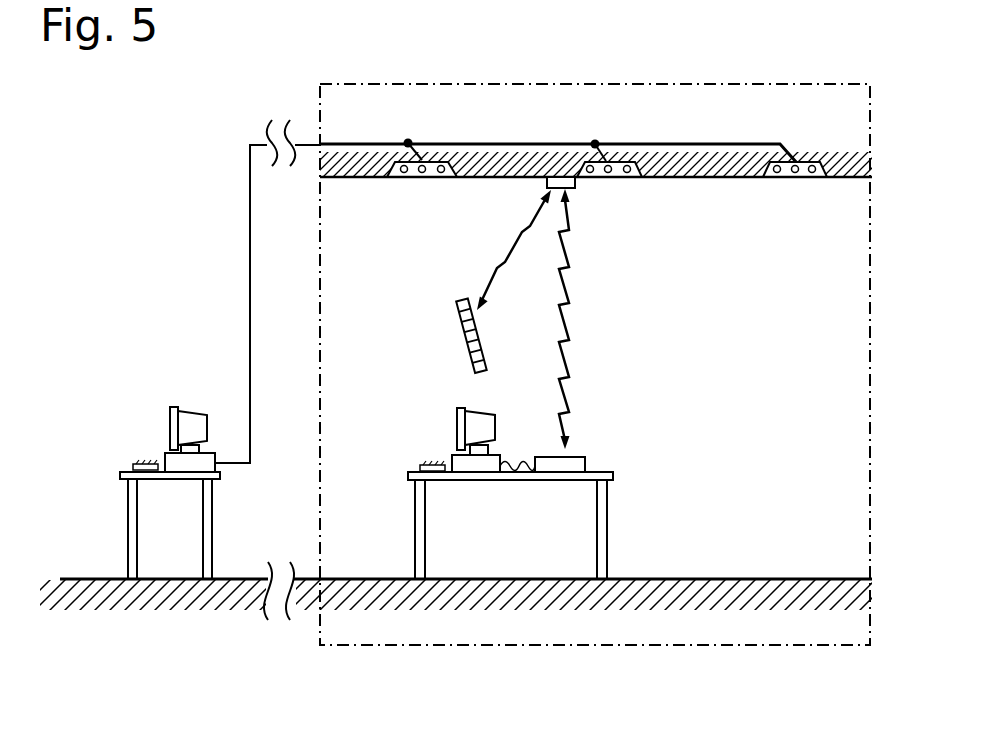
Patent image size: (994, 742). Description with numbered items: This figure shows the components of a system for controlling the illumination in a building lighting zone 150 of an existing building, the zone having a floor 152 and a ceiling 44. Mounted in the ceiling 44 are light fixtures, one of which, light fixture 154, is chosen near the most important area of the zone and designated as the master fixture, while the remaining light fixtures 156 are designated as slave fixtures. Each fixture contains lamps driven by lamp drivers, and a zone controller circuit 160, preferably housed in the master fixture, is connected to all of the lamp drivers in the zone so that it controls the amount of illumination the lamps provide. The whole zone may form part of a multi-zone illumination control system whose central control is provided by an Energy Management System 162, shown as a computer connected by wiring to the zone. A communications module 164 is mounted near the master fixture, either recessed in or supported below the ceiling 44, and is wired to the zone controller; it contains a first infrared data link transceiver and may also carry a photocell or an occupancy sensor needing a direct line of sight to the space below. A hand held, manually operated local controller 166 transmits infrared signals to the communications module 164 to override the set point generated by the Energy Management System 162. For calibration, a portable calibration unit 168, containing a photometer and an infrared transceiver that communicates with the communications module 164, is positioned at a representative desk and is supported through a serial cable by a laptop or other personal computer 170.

The building lighting zone 150 is at (497, 82).
The floor 152 is at (778, 574).
The master light fixture 154 is at (609, 192).
The slave light fixtures 156 is at (419, 192).
The zone controller circuit 160 is at (616, 161).
The communications module 164 is at (546, 185).
The local controller 166 is at (460, 330).
The portable calibration unit 168 is at (585, 465).
The personal computer 170 is at (428, 434).
The Energy Management System 162 is at (152, 433).
The ceiling 44 is at (846, 190).